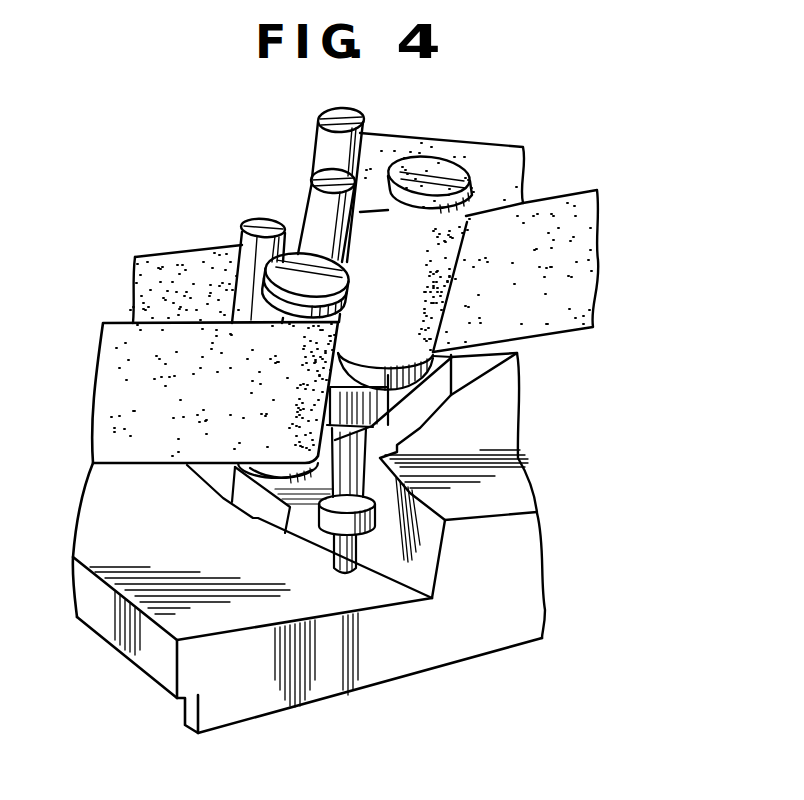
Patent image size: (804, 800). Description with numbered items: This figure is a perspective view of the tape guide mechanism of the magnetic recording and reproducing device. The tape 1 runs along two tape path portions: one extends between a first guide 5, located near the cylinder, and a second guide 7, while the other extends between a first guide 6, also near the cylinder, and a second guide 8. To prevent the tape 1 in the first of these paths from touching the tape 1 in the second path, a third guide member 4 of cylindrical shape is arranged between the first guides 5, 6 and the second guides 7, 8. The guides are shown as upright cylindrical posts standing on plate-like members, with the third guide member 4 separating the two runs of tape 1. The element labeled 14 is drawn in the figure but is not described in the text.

The tape 1 is at (583, 248).
The third guide member 4 is at (307, 204).
The first guide 5 is at (367, 140).
The first guide 6 is at (238, 238).
The second guide 7 is at (443, 173).
The second guide 8 is at (290, 240).
The washer 14 is at (345, 568).